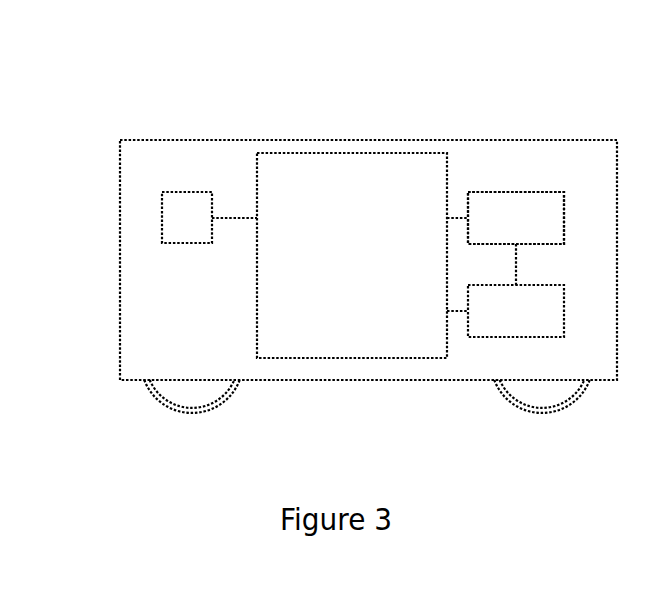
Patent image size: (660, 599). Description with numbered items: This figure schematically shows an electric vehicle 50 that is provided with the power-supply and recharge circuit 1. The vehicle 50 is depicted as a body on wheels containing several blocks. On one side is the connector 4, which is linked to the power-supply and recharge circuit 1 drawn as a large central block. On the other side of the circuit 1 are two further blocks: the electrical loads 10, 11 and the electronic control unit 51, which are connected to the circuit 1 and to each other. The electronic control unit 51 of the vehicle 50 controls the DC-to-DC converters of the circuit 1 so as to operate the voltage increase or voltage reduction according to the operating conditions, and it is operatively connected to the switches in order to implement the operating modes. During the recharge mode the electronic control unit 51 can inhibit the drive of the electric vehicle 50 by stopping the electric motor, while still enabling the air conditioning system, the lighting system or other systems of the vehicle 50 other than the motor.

The electric vehicle 50 is at (128, 101).
The power-supply and recharge circuit 1 is at (263, 311).
The connector 4 is at (177, 243).
The electrical load 10 is at (538, 171).
The electrical load 11 is at (516, 218).
The electronic control unit 51 is at (556, 330).